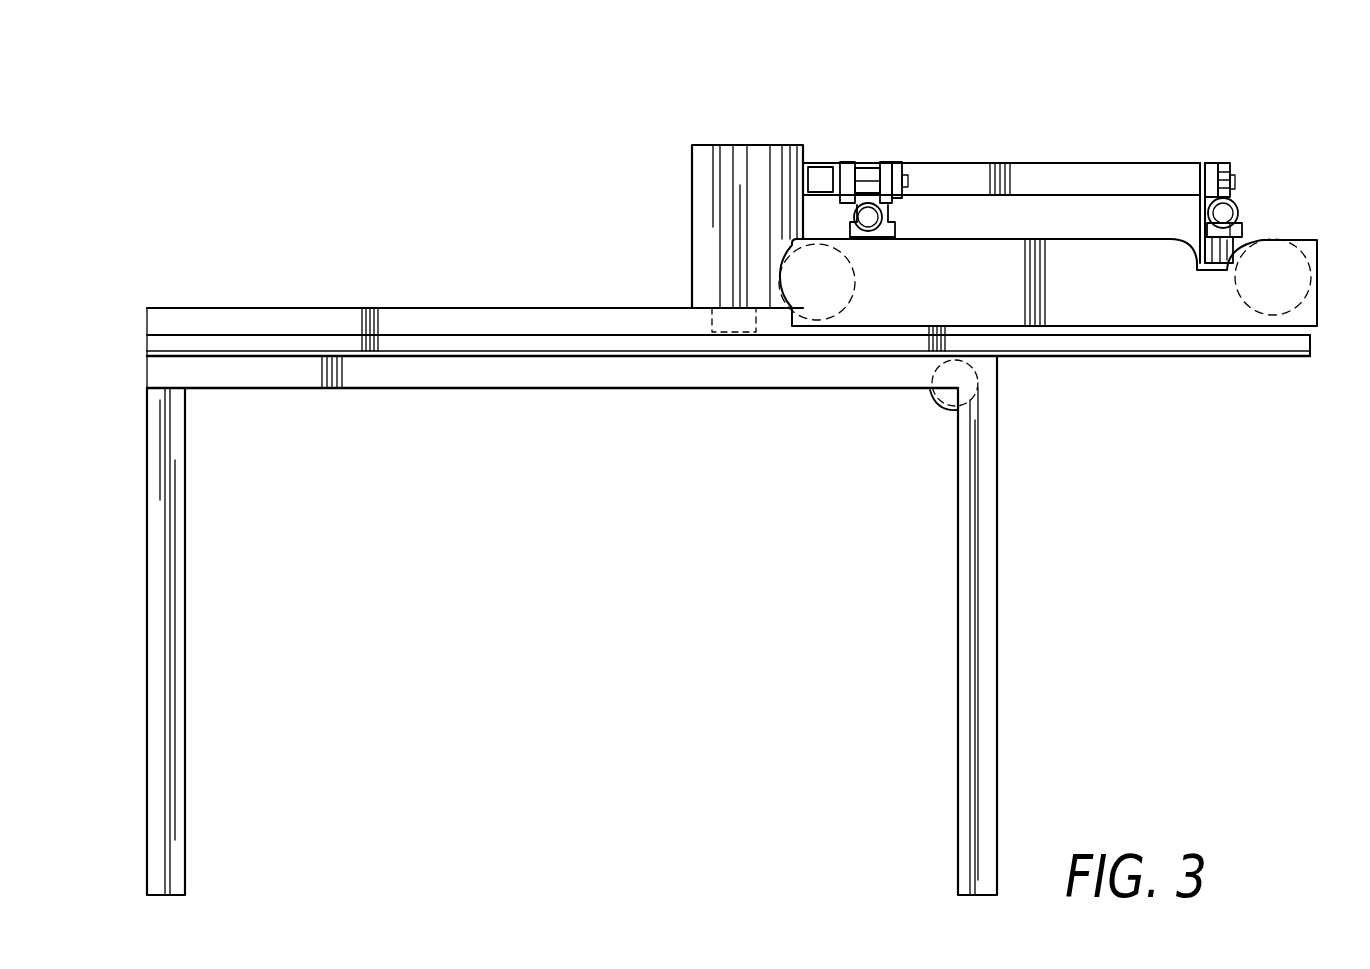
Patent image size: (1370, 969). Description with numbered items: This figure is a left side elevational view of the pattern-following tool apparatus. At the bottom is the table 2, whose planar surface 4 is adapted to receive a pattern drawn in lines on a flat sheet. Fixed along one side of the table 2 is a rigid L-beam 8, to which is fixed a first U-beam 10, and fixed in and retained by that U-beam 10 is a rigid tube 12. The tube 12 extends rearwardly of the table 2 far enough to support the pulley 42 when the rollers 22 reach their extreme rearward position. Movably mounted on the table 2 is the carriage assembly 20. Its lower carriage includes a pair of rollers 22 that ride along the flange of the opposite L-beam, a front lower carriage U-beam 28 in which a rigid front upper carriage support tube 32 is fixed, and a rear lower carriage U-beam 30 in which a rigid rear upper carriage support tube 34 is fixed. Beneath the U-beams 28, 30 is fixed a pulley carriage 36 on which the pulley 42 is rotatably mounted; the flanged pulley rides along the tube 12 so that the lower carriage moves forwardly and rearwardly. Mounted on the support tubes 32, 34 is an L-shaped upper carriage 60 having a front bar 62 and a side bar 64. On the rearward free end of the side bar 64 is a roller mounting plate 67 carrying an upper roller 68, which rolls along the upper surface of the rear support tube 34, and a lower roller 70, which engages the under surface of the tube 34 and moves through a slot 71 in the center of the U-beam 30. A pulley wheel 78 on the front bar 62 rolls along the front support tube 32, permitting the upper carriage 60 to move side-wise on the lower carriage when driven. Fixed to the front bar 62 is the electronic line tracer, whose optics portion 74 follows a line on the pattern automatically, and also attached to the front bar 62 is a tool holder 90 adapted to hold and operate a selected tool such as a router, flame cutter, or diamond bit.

The table 2 is at (803, 390).
The planar surface 4 is at (528, 352).
The L-beam 8 is at (145, 372).
The first U-beam 10 is at (145, 346).
The rigid tube 12 is at (145, 321).
The carriage assembly 20 is at (992, 78).
The rollers 22 is at (940, 401).
The lower carriage U-beam 28 is at (890, 232).
The lower carriage U-beam 30 is at (1242, 228).
The front upper carriage support tube 32 is at (885, 215).
The rear upper carriage support tube 34 is at (1230, 210).
The pulley carriage 36 is at (1043, 240).
The pulley 42 is at (1255, 257).
The upper carriage 60 is at (1187, 162).
The front bar 62 is at (818, 162).
The side bar 64 is at (1100, 162).
The roller mounting plate 67 is at (1200, 210).
The upper roller 68 is at (1228, 163).
The lower roller 70 is at (1227, 263).
The slot 71 is at (1200, 247).
The optics portion 74 is at (722, 340).
The pulley wheel 78 is at (870, 168).
The tool holder 90 is at (758, 150).